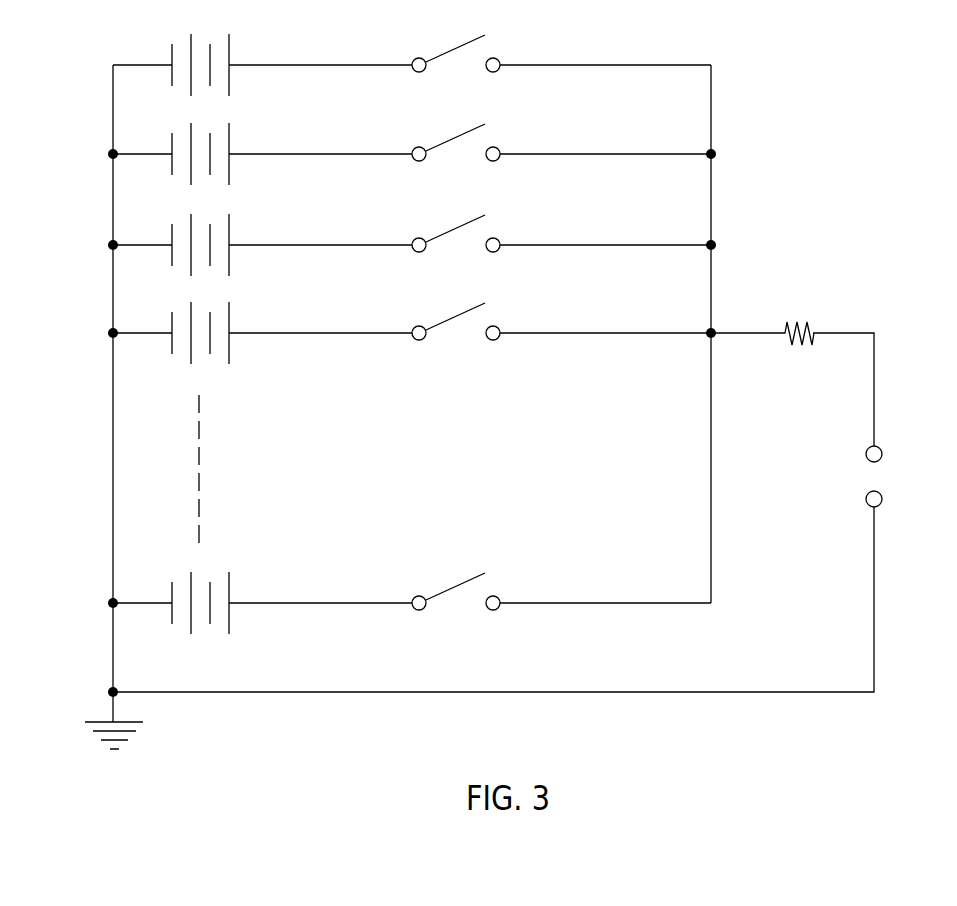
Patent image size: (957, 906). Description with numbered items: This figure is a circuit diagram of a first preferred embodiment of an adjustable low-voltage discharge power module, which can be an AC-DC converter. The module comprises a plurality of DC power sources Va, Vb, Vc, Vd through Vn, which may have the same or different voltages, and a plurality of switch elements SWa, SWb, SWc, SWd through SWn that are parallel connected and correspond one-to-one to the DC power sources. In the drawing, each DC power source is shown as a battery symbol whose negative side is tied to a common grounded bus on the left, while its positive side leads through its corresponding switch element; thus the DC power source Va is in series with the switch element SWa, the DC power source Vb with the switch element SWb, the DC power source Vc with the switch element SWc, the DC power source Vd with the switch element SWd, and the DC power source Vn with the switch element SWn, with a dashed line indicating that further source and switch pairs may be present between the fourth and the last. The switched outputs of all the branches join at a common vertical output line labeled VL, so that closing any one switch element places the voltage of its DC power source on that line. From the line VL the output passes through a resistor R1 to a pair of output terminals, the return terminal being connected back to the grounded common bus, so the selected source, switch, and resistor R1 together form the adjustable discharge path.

The DC power source Va is at (292, 65).
The DC power source Vb is at (292, 154).
The DC power source Vc is at (292, 245).
The DC power source Vd is at (292, 333).
The DC power source Vn is at (292, 603).
The switch element SWa is at (561, 53).
The switch element SWb is at (561, 142).
The switch element SWc is at (561, 233).
The switch element SWd is at (561, 321).
The switch element SWn is at (561, 591).
The load voltage line VL is at (732, 334).
The resistor R1 is at (762, 355).